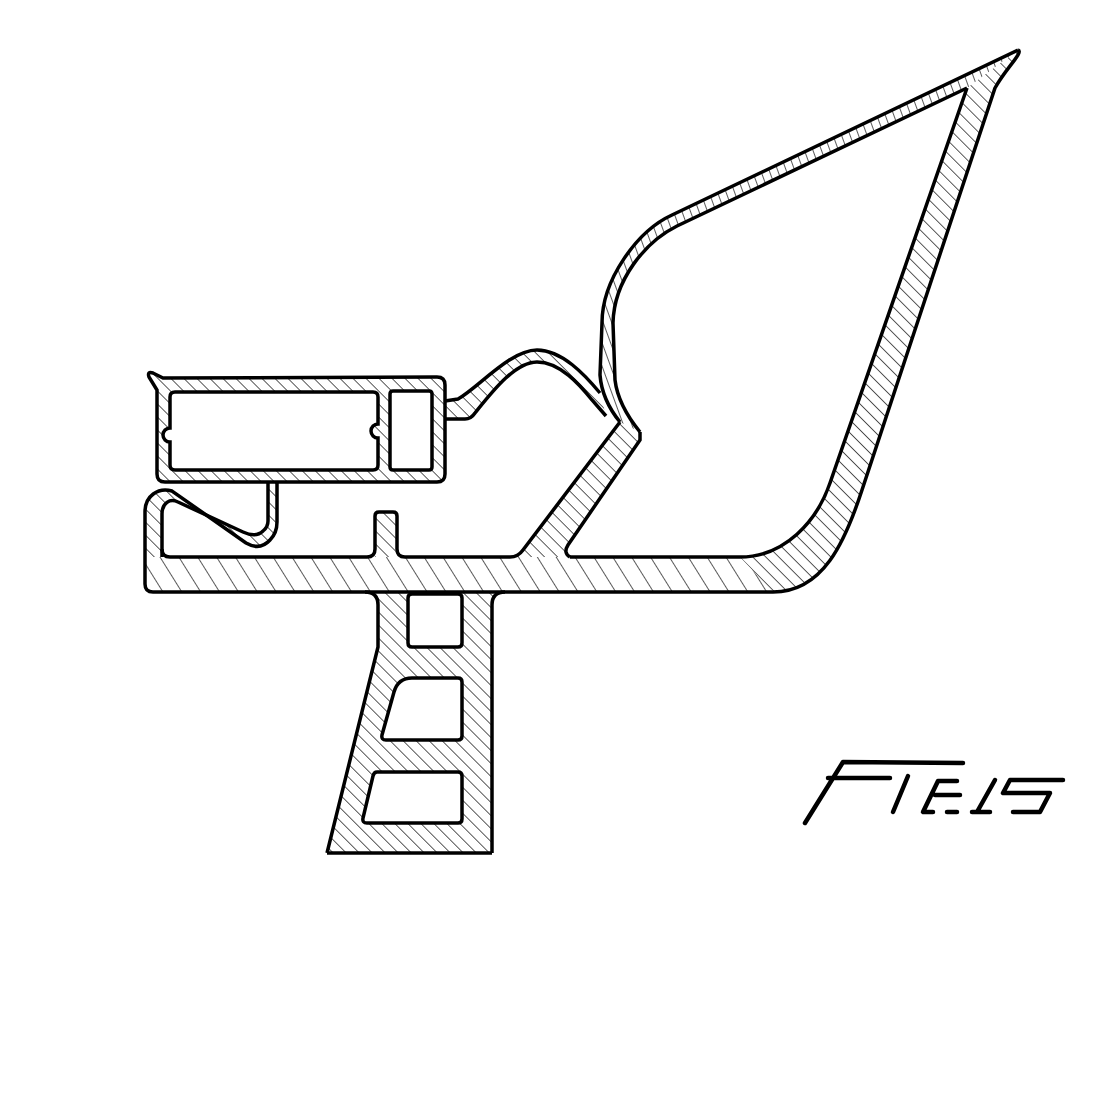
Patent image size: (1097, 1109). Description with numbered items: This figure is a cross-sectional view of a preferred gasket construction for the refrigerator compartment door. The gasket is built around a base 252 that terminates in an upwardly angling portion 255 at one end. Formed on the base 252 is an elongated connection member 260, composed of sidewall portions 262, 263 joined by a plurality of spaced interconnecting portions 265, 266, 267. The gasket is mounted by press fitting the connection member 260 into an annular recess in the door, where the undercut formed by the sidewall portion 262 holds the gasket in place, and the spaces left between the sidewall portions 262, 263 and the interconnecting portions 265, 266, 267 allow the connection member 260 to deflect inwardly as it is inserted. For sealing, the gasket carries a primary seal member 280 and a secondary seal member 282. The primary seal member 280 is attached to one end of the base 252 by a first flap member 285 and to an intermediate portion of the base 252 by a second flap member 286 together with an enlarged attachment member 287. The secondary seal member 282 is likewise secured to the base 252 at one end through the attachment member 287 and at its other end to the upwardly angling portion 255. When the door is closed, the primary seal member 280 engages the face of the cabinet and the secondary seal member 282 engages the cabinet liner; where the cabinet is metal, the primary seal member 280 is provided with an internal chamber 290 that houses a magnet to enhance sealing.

The base 252 is at (657, 572).
The upwardly angling portion 255 is at (897, 337).
The connection member 260 is at (500, 708).
The sidewall portion 262 is at (378, 703).
The sidewall portion 263 is at (480, 678).
The interconnecting portion 265 is at (433, 662).
The interconnecting portion 266 is at (433, 754).
The interconnecting portion 267 is at (447, 838).
The primary seal member 280 is at (281, 364).
The secondary seal member 282 is at (681, 200).
The first flap member 285 is at (207, 515).
The second flap member 286 is at (538, 348).
The attachment member 287 is at (587, 488).
The internal chamber 290 is at (270, 431).